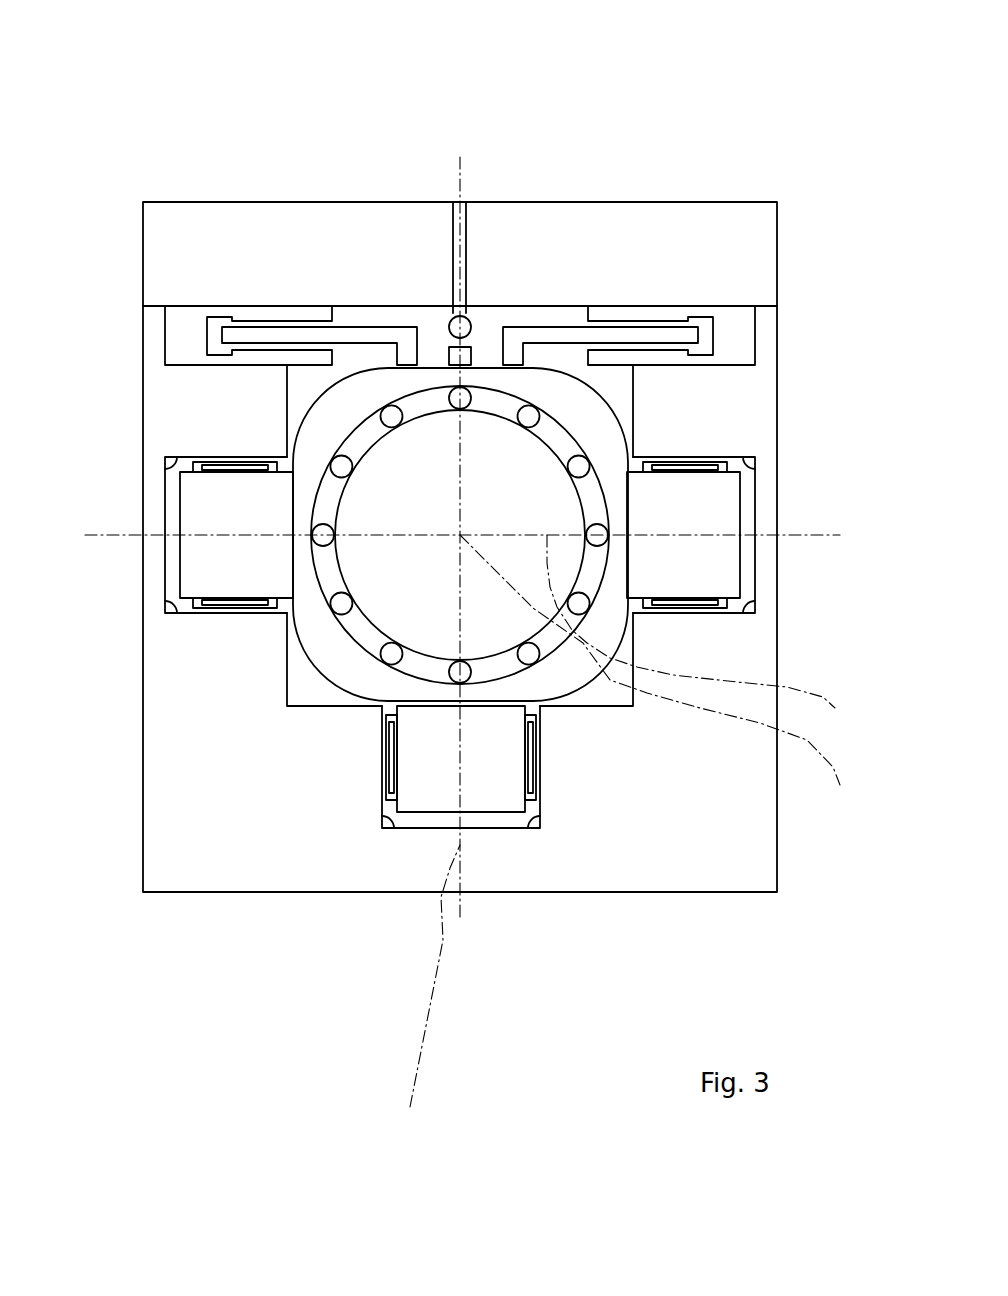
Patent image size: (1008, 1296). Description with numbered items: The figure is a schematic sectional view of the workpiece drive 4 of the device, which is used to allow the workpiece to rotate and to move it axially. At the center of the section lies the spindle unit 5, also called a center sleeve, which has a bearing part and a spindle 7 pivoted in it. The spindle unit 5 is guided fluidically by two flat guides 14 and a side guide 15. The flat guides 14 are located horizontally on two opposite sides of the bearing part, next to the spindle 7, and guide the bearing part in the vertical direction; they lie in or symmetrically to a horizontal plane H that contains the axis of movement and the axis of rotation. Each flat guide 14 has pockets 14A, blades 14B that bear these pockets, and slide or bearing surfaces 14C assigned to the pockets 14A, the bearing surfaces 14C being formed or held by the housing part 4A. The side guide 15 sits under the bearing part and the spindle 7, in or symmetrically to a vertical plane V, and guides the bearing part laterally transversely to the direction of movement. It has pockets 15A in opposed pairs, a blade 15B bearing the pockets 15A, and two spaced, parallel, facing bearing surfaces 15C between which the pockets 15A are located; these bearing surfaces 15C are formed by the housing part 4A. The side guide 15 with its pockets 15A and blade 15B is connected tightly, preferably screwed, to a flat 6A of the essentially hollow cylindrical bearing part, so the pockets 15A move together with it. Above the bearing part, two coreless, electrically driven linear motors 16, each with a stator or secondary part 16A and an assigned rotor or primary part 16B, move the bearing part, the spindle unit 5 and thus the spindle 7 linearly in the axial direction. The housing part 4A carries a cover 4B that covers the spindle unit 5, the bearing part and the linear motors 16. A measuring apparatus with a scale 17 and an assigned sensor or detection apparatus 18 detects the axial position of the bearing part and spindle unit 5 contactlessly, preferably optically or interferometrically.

The workpiece drive 4 is at (205, 162).
The housing part 4A is at (730, 845).
The cover 4B is at (737, 227).
The spindle unit 5 is at (578, 700).
The flat 6A is at (536, 553).
The spindle 7 is at (407, 480).
The flat guides 14 is at (178, 519).
The pockets 14A is at (463, 534).
The blades 14B is at (463, 533).
The slide or bearing surfaces 14C is at (463, 534).
The side guide 15 is at (480, 815).
The pockets 15A is at (464, 875).
The blade 15B is at (523, 869).
The bearing surfaces 15C is at (469, 897).
The linear motor 16 is at (347, 317).
The stator or secondary part 16A is at (460, 189).
The rotor or primary part 16B is at (460, 189).
The scale 17 is at (431, 203).
The sensor apparatus or detection apparatus 18 is at (458, 155).
The horizontal plane H is at (707, 633).
The vertical plane V is at (421, 993).